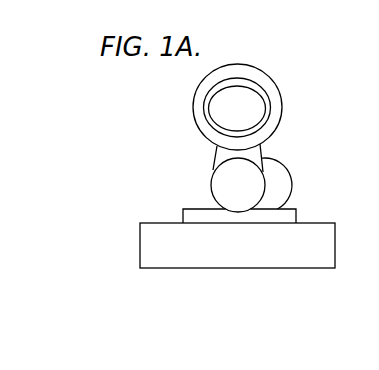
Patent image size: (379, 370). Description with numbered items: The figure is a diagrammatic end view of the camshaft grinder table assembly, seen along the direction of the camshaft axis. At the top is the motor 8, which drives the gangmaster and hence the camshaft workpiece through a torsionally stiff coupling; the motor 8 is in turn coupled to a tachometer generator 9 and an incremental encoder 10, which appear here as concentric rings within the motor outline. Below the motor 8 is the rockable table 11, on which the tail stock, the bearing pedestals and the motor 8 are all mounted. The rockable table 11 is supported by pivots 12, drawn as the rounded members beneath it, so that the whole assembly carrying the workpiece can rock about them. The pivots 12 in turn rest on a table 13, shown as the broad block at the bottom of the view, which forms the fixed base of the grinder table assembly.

The motor 8 is at (262, 88).
The tachometer generator 9 is at (262, 88).
The incremental encoder 10 is at (210, 103).
The rockable table 11 is at (214, 178).
The pivots 12 is at (284, 176).
The table 13 is at (152, 220).